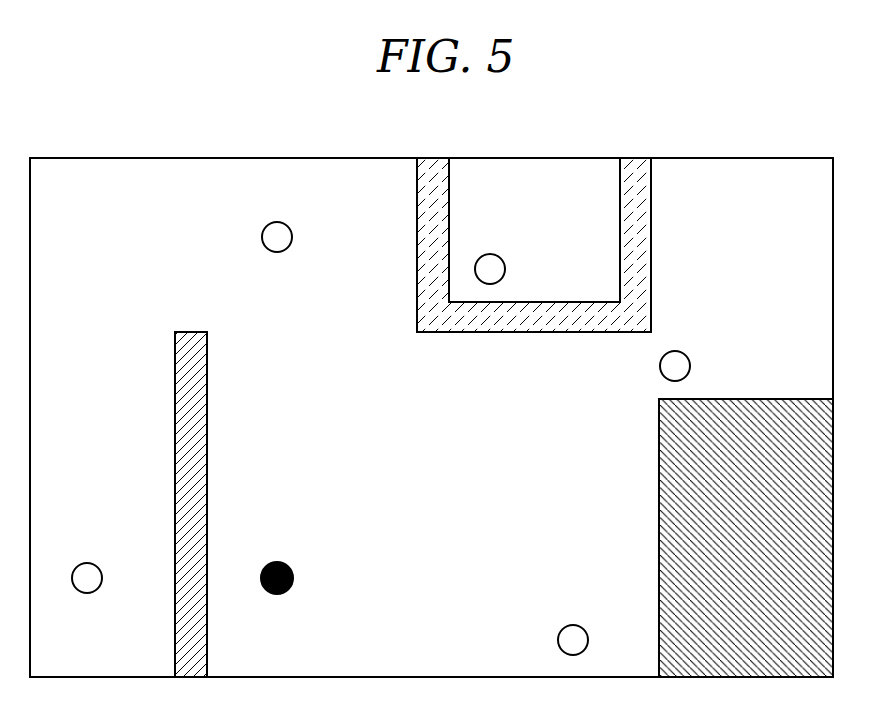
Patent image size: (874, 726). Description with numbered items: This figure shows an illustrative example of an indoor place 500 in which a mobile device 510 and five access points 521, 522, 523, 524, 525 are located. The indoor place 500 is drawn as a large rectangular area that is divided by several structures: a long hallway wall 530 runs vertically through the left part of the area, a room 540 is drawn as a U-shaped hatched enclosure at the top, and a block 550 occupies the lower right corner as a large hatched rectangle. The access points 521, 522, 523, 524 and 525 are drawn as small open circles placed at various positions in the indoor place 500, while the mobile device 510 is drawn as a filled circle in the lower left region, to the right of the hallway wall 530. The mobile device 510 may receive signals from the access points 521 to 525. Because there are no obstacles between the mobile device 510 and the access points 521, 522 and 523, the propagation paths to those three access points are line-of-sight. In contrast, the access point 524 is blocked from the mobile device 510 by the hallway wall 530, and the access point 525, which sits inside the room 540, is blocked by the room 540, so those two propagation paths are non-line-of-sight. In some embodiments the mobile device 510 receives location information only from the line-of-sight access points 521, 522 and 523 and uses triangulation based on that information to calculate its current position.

The room / cleaning area map 500 is at (451, 133).
The mobile device 510 is at (294, 578).
The access point 521 is at (293, 237).
The access point 522 is at (589, 640).
The access point 523 is at (691, 366).
The access point 524 is at (103, 578).
The access point 525 is at (506, 269).
The hallway wall 530 is at (208, 470).
The room 540 is at (651, 276).
The block 550 is at (659, 495).